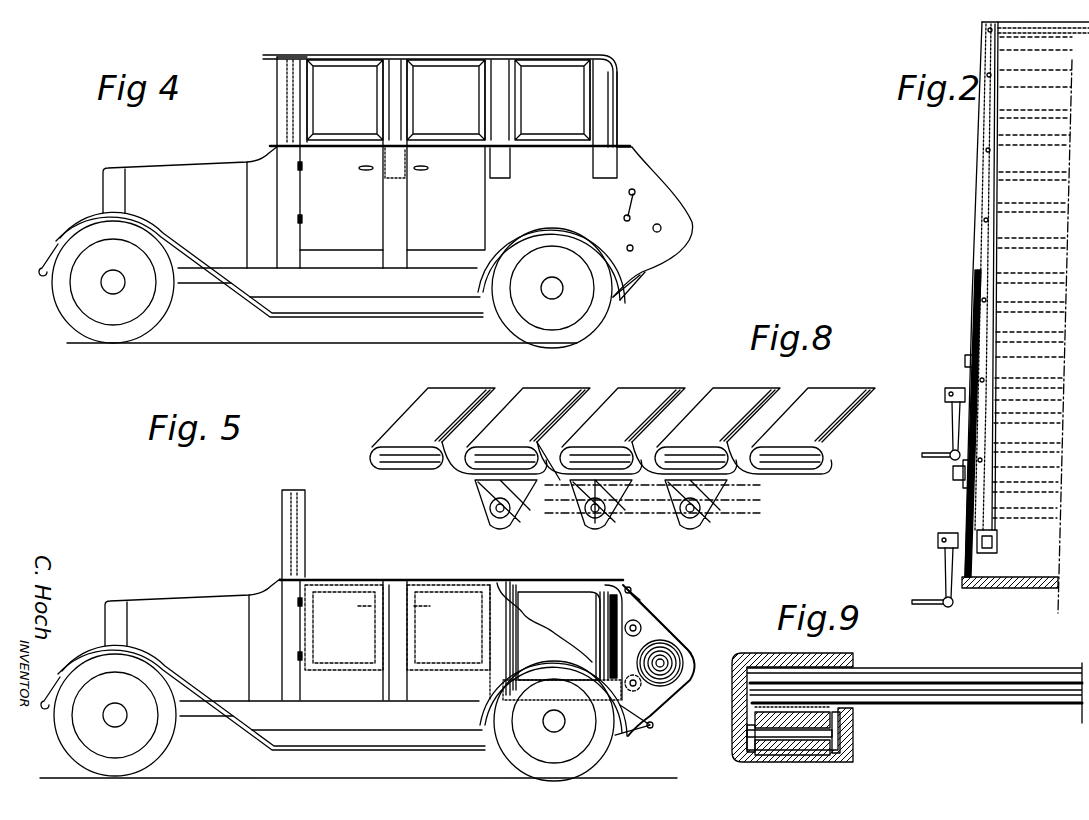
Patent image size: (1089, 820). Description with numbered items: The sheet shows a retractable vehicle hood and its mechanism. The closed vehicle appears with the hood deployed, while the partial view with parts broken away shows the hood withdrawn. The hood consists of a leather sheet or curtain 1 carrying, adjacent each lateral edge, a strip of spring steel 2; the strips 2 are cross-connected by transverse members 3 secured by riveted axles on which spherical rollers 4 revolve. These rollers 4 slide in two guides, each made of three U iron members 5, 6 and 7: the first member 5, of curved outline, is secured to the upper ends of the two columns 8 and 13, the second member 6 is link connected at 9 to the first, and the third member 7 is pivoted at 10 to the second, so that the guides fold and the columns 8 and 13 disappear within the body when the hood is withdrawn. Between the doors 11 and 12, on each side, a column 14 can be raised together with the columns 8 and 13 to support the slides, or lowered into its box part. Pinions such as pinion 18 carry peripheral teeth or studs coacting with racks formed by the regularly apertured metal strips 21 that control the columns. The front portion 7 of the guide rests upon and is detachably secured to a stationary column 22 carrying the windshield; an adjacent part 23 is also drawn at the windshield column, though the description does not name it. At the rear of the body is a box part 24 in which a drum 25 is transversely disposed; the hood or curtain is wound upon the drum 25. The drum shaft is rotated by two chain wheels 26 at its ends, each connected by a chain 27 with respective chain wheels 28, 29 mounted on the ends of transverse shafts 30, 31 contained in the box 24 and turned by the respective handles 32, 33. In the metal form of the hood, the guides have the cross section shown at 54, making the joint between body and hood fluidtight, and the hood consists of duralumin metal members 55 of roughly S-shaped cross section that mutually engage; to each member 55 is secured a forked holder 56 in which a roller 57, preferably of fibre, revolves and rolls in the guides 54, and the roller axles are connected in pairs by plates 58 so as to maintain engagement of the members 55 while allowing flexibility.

In FIG. 4, the leather sheet or curtain 1 is at (467, 56).
In FIG. 5, the leather sheet or curtain 1 is at (662, 645).
In FIG. 2, the leather sheet or curtain 1 is at (1012, 220).
In FIG. 2, the strip of spring steel 2 is at (988, 150).
In FIG. 2, the transverse members 3 is at (1058, 118).
In FIG. 5, the spherical rollers 4 is at (632, 592).
In FIG. 2, the spherical rollers 4 is at (983, 195).
In FIG. 4, the first U iron member 5 is at (585, 56).
In FIG. 5, the first U iron member 5 is at (530, 574).
In FIG. 4, the second U iron member 6 is at (430, 56).
In FIG. 5, the second U iron member 6 is at (560, 574).
In FIG. 4, the third U iron member 7 is at (330, 55).
In FIG. 5, the third U iron member 7 is at (600, 586).
In FIG. 4, the column 8 is at (602, 107).
In FIG. 5, the column 8 is at (612, 617).
In FIG. 4, the link connection 9 is at (503, 50).
In FIG. 5, the link connection 9 is at (506, 581).
In FIG. 4, the pivot 10 is at (380, 56).
In FIG. 5, the pivot 10 is at (626, 574).
In FIG. 4, the door 11 is at (460, 150).
In FIG. 5, the door 11 is at (462, 585).
In FIG. 4, the door 12 is at (356, 150).
In FIG. 5, the door 12 is at (357, 585).
In FIG. 4, the column 13 is at (500, 105).
In FIG. 5, the column 13 is at (527, 582).
In FIG. 4, the column 14 is at (393, 104).
In FIG. 5, the column 14 is at (402, 585).
In FIG. 5, the pinion 18 is at (603, 602).
In FIG. 5, the metal strips 21 is at (606, 631).
In FIG. 4, the stationary column 22 is at (280, 74).
In FIG. 5, the stationary column 22 is at (284, 512).
In FIG. 4, the windshield post guide 23 is at (281, 100).
In FIG. 5, the windshield post guide 23 is at (284, 555).
In FIG. 4, the box part 24 is at (683, 180).
In FIG. 5, the box part 24 is at (642, 713).
In FIG. 2, the box part 24 is at (973, 296).
In FIG. 5, the drum 25 is at (668, 694).
In FIG. 2, the chain wheels 26 is at (965, 488).
In FIG. 5, the chain 27 is at (625, 672).
In FIG. 2, the chain wheel 28 is at (966, 362).
In FIG. 2, the chain wheel 29 is at (976, 555).
In FIG. 4, the transverse shaft 30 is at (630, 182).
In FIG. 5, the transverse shaft 30 is at (640, 622).
In FIG. 4, the transverse shaft 31 is at (628, 246).
In FIG. 5, the transverse shaft 31 is at (640, 686).
In FIG. 4, the handle 32 is at (625, 216).
In FIG. 2, the handle 32 is at (930, 455).
In FIG. 2, the handle 33 is at (930, 604).
In FIG. 9, the guide 54 is at (750, 655).
In FIG. 8, the metal members 55 is at (470, 394).
In FIG. 9, the metal members 55 is at (1003, 682).
In FIG. 8, the forked holder 56 is at (478, 490).
In FIG. 9, the forked holder 56 is at (836, 718).
In FIG. 8, the roller 57 is at (537, 500).
In FIG. 9, the roller 57 is at (800, 753).
In FIG. 8, the plates 58 is at (572, 516).
In FIG. 9, the plates 58 is at (840, 748).